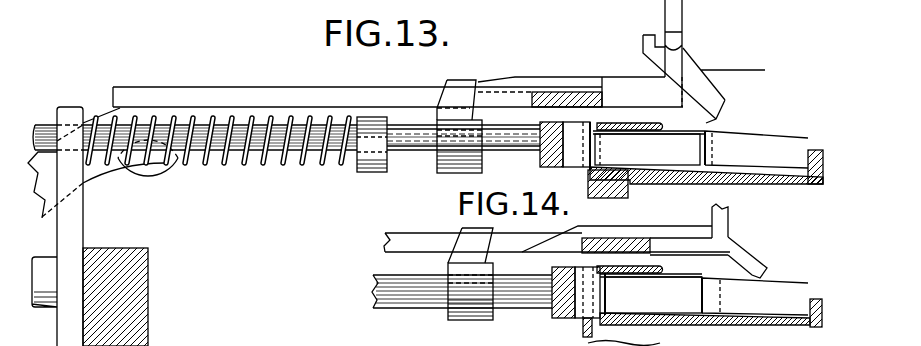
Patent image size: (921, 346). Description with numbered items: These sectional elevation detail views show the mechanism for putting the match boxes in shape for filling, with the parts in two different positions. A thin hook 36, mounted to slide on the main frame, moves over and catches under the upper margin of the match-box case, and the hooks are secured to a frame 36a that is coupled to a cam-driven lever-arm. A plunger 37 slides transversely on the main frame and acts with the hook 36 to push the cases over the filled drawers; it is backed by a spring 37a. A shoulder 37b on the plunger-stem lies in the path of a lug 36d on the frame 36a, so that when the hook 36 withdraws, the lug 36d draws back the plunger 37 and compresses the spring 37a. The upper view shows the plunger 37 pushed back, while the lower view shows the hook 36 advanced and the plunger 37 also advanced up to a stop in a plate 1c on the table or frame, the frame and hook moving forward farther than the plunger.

In FIG. 13, the plate 1c is at (621, 131).
In FIG. 14, the plate 1c is at (625, 275).
In FIG. 13, the hook 36 is at (716, 123).
In FIG. 14, the hook 36 is at (752, 278).
In FIG. 13, the frame 36a is at (618, 100).
In FIG. 14, the frame 36a is at (421, 232).
In FIG. 13, the lug 36d is at (493, 80).
In FIG. 14, the lug 36d is at (540, 236).
In FIG. 13, the plunger 37 is at (545, 165).
In FIG. 14, the plunger 37 is at (552, 313).
In FIG. 13, the spring 37a is at (218, 162).
In FIG. 13, the shoulder 37b is at (460, 80).
In FIG. 14, the shoulder 37b is at (470, 274).